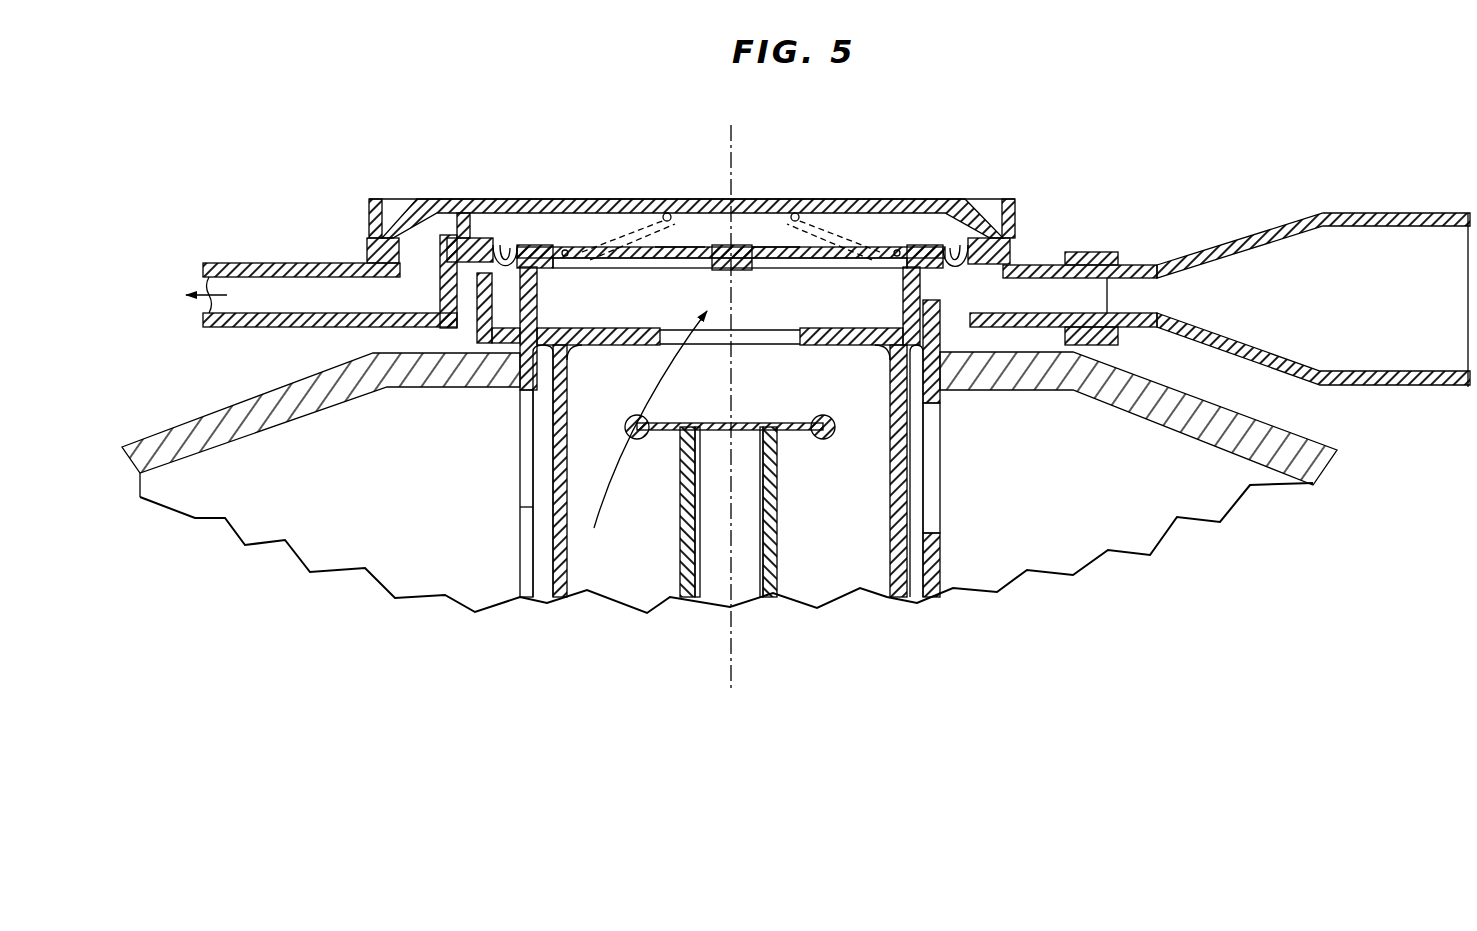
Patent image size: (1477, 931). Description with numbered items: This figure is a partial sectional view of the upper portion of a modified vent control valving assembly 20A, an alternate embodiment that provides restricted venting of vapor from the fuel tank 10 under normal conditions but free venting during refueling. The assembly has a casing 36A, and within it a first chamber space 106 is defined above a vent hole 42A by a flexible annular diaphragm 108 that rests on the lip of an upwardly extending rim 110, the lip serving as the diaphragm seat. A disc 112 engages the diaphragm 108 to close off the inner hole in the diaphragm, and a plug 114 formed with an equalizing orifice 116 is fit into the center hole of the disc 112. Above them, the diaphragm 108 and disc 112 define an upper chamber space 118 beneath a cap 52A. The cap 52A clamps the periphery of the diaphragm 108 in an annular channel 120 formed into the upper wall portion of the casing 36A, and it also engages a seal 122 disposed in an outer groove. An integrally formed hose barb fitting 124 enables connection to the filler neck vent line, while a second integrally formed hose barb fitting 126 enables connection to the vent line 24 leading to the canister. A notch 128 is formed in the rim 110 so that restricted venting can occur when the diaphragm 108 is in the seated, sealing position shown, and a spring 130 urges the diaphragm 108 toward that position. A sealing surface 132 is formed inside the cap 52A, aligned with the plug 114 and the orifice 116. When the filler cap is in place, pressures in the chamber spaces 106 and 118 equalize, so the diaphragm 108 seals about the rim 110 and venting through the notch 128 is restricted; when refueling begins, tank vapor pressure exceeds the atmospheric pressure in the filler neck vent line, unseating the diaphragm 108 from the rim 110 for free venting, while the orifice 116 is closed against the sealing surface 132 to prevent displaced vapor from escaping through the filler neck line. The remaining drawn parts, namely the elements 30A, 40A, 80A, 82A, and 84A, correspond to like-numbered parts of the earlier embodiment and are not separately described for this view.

The fuel tank 10 is at (233, 404).
The vent control valving assembly 20A is at (356, 185).
The vent line 24 is at (1390, 389).
The support tube 30A is at (518, 447).
The casing 36A is at (940, 569).
The cup wall 40A is at (853, 347).
The vent hole 42A is at (762, 337).
The cap 52A is at (518, 196).
The pins 80A is at (636, 440).
The inner tube 82A is at (700, 572).
The inner tube 84A is at (818, 440).
The first chamber space 106 is at (628, 313).
The flexible annular diaphragm 108 is at (923, 238).
The rim 110 is at (512, 320).
The disc 112 is at (684, 246).
The plug 114 is at (753, 249).
The equalizing orifice 116 is at (710, 246).
The upper chamber space 118 is at (578, 218).
The annular channel 120 is at (456, 236).
The seal 122 is at (370, 235).
The hose barb fitting 124 is at (244, 261).
The hose barb fitting 126 is at (1033, 261).
The notch 128 is at (934, 290).
The spring 130 is at (622, 221).
The sealing surface 132 is at (746, 244).